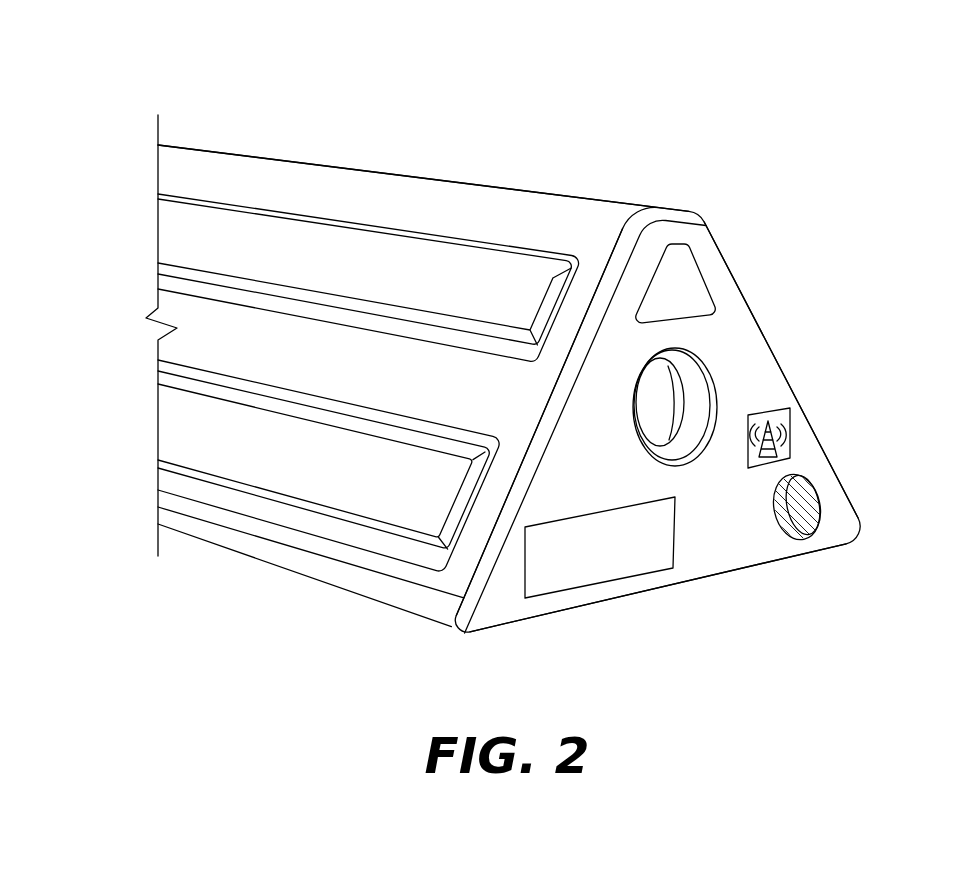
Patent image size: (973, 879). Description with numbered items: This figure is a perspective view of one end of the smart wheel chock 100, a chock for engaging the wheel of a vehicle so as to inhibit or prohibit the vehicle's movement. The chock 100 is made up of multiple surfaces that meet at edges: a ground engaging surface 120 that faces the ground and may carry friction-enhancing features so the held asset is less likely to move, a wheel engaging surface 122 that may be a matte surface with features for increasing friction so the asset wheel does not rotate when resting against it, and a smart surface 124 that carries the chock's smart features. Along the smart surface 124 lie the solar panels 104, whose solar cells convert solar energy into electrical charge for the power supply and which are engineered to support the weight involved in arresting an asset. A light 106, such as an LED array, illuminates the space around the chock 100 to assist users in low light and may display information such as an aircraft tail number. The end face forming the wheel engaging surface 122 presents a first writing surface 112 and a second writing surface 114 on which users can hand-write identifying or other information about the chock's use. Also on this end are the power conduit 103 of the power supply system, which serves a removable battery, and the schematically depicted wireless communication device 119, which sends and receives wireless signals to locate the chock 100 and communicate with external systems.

The smart wheel chock 100 is at (855, 182).
The smart surface 124 is at (293, 173).
The solar panels 104 is at (408, 250).
The light 106 is at (413, 390).
The first writing surface 112 is at (682, 262).
The wheel engaging surface 122 is at (772, 328).
The wireless communication device 119 is at (787, 430).
The power conduit 103 is at (797, 510).
The second writing surface 114 is at (608, 566).
The ground engaging surface 120 is at (742, 583).